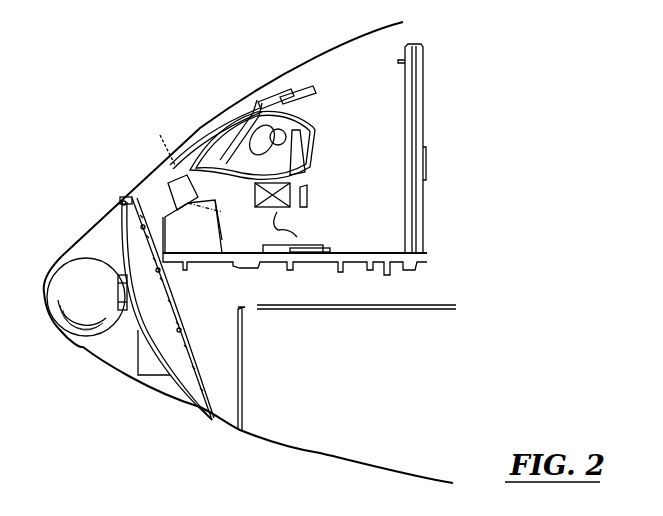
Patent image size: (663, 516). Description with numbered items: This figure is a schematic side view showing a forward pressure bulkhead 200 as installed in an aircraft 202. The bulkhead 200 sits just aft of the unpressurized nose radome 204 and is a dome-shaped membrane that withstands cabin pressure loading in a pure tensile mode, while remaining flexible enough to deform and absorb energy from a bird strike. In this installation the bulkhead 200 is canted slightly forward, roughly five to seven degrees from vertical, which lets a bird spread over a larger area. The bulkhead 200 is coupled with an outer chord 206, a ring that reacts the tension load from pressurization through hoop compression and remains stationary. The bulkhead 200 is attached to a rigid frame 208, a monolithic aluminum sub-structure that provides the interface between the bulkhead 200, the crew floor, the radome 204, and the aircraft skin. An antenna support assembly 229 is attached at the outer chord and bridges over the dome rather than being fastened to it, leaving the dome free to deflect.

The forward pressure bulkhead 200 is at (195, 360).
The aircraft 202 is at (320, 52).
The nose radome 204 is at (65, 254).
The outer chord 206 is at (134, 198).
The rigid frame 208 is at (227, 263).
The antenna support assembly 229 is at (110, 215).